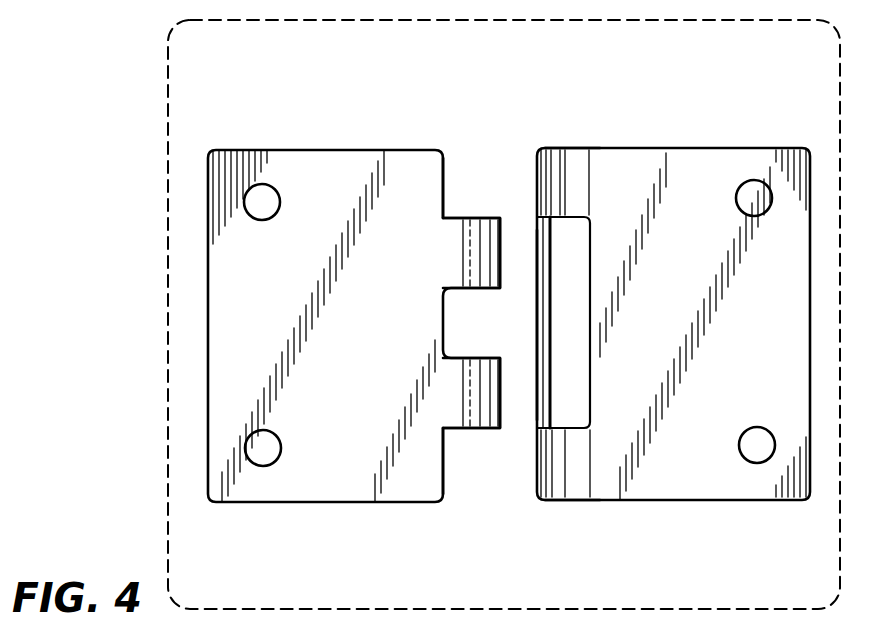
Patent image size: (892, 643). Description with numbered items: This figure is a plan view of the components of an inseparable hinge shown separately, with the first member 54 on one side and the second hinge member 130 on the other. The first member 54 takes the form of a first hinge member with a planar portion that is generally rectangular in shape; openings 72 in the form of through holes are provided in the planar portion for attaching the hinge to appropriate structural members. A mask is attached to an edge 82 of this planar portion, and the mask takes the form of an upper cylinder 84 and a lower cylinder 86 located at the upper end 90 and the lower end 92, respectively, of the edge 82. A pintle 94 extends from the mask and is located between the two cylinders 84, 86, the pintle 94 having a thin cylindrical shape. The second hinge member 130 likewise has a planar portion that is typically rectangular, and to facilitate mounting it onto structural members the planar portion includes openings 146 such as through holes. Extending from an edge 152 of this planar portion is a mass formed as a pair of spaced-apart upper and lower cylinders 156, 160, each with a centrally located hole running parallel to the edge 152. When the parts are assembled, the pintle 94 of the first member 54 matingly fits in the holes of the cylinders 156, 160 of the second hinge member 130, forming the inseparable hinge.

The second hinge member 130 is at (198, 138).
The first member 54 is at (806, 133).
The openings 146 is at (265, 190).
The edge 152 is at (445, 175).
The upper cylinder 156 is at (508, 234).
The lower cylinder 160 is at (500, 428).
The upper cylinder 84 is at (535, 196).
The lower cylinder 86 is at (537, 450).
The upper end 90 is at (585, 168).
The lower end 92 is at (585, 478).
The pintle 94 is at (537, 372).
The edge 82 is at (590, 322).
The opening 72 is at (740, 185).